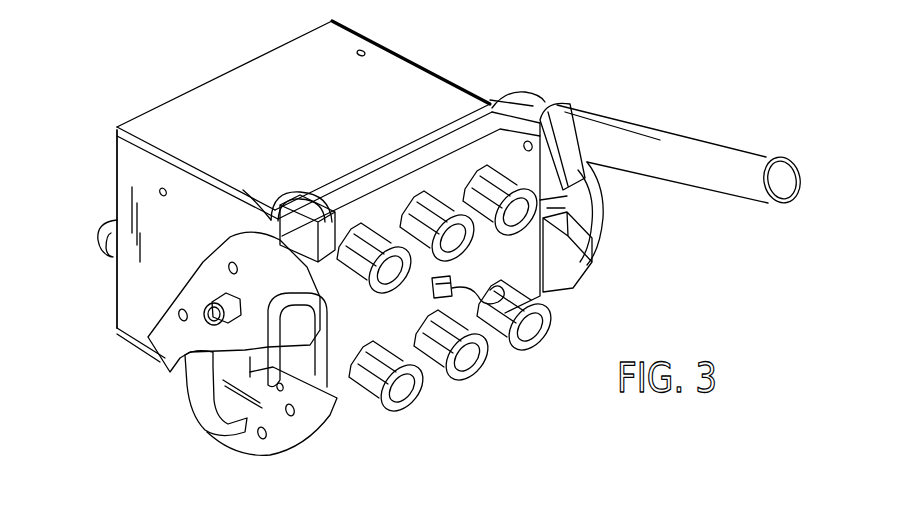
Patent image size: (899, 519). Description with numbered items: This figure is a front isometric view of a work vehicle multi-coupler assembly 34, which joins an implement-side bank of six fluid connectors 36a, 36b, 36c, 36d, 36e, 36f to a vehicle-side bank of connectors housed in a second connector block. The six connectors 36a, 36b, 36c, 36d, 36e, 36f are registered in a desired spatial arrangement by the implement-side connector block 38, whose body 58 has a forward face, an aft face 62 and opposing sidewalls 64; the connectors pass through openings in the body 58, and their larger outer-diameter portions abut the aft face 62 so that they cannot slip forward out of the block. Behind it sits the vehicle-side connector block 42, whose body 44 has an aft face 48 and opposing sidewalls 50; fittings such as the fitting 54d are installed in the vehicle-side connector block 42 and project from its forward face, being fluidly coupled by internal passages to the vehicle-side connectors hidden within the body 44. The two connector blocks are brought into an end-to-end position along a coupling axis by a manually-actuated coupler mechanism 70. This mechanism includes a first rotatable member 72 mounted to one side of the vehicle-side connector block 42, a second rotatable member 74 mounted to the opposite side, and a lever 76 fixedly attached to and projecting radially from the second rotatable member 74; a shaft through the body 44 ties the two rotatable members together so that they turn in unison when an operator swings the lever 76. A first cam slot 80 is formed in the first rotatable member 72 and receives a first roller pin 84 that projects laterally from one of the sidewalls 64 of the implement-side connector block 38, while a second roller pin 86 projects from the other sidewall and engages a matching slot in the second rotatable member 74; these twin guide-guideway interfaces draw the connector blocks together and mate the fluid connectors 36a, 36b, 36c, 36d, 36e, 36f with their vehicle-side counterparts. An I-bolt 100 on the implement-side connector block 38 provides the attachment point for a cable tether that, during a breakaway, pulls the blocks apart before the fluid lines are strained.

The multi-coupler assembly 34 is at (150, 84).
The fluid connector 36a is at (372, 230).
The fluid connector 36b is at (432, 214).
The fluid connector 36c is at (460, 198).
The fluid connector 36d is at (416, 400).
The fluid connector 36e is at (460, 384).
The fluid connector 36f is at (522, 353).
The implement-side connector block 38 is at (516, 118).
The vehicle-side connector block 42 is at (416, 80).
The body 44 is at (316, 109).
The aft face 48 is at (467, 116).
The sidewalls 50 is at (128, 167).
The fitting 54d is at (102, 253).
The body 58 is at (477, 156).
The aft face 62 is at (338, 230).
The sidewalls 64 is at (265, 192).
The coupler mechanism 70 is at (232, 456).
The first rotatable member 72 is at (203, 270).
The second rotatable member 74 is at (507, 96).
The lever 76 is at (680, 140).
The first cam slot 80 is at (258, 365).
The first roller pin 84 is at (312, 326).
The second roller pin 86 is at (547, 210).
The I-bolt 100 is at (470, 288).